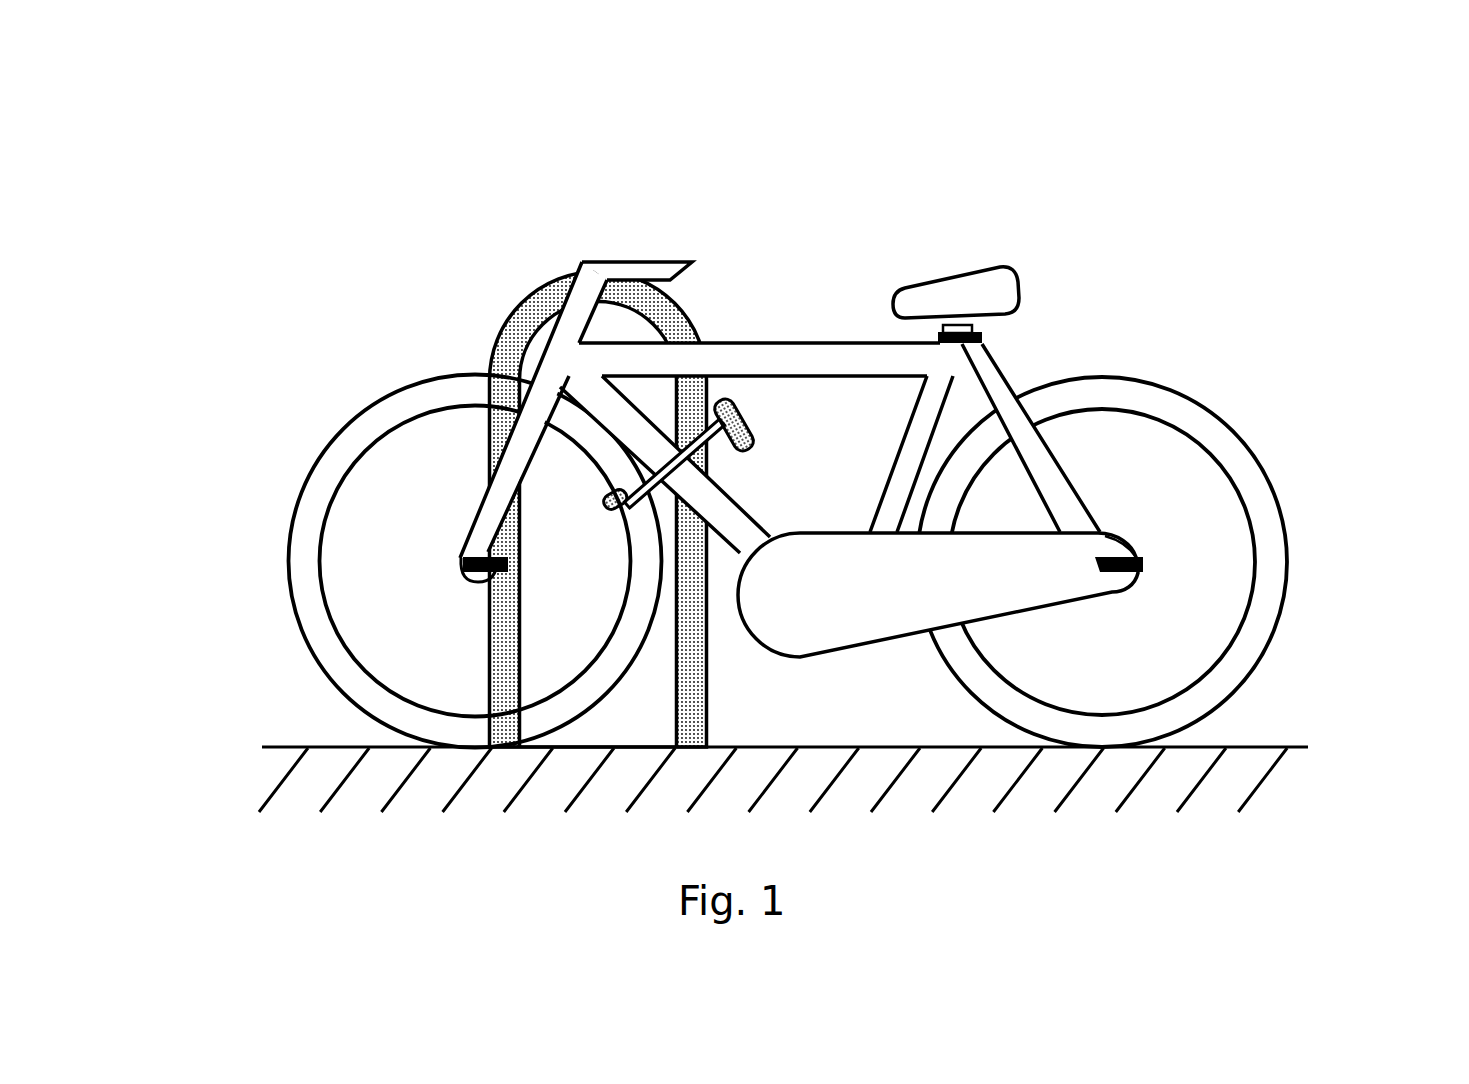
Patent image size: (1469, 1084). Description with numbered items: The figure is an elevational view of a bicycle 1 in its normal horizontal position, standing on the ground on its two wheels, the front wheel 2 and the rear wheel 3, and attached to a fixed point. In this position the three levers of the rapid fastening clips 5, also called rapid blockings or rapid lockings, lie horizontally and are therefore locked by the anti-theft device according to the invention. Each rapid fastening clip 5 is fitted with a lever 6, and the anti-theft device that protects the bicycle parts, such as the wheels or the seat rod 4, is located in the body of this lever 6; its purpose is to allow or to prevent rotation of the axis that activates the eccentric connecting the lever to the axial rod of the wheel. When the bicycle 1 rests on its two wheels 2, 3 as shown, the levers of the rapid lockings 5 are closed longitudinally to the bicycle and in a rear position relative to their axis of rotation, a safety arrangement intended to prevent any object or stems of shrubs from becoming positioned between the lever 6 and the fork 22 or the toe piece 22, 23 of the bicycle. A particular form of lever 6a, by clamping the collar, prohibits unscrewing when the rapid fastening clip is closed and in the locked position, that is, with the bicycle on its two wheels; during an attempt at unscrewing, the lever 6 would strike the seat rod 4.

The bicycle 1 is at (806, 426).
The front wheel 2 is at (395, 625).
The rear wheel 3 is at (1143, 653).
The seat rod 4 is at (985, 360).
The rapid fastening clip 5 is at (462, 560).
The lever 6 is at (467, 557).
The lever form 6a is at (940, 333).
The fork 22 is at (493, 497).
The toe piece 23 is at (1140, 558).